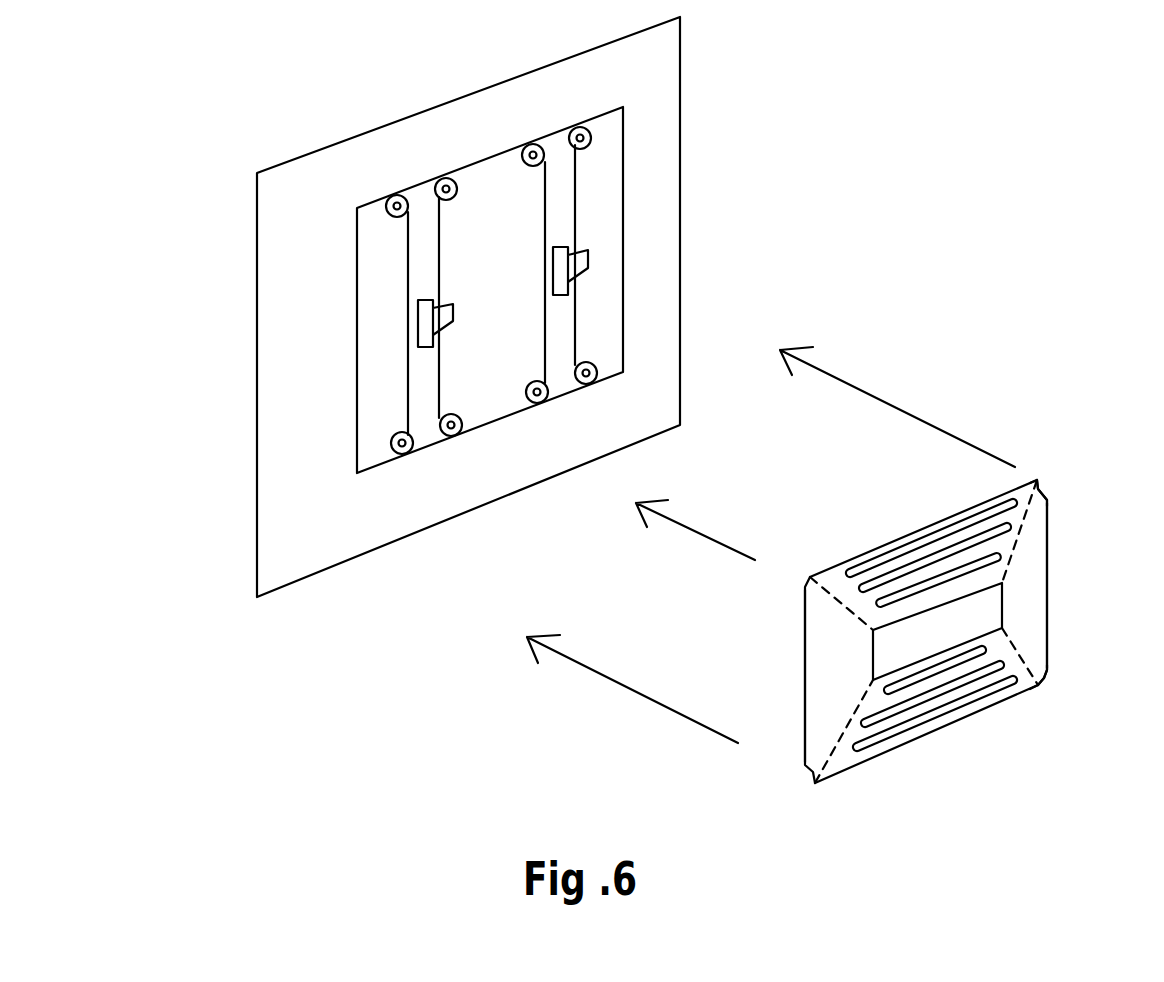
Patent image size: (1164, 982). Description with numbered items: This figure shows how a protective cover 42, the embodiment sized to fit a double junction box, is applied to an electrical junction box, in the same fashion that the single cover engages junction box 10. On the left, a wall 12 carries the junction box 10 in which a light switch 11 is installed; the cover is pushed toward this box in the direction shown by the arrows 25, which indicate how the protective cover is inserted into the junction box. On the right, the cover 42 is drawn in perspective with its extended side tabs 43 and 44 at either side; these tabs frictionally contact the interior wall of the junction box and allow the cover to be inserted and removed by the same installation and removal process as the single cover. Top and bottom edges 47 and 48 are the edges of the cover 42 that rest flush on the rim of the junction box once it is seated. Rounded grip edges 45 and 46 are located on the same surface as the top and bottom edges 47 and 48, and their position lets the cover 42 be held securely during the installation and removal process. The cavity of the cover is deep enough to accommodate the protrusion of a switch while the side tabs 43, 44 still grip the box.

The junction box 10 is at (357, 388).
The light switch 11 is at (420, 203).
The wall 12 is at (643, 223).
The arrows 25 is at (771, 557).
The cover 42 is at (938, 738).
The extended side tab 43 is at (803, 678).
The extended side tab 44 is at (1050, 623).
The rounded grip ridge 45 is at (870, 743).
The rounded grip ridge 46 is at (1030, 485).
The top edge 47 is at (1007, 698).
The bottom edge 48 is at (940, 513).